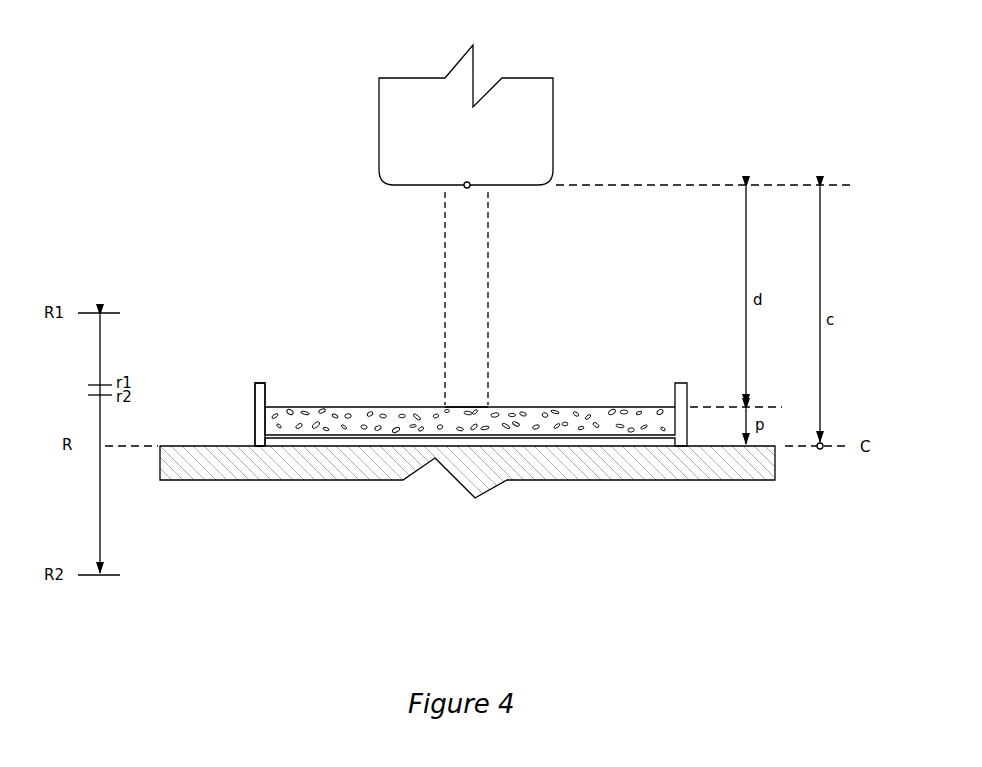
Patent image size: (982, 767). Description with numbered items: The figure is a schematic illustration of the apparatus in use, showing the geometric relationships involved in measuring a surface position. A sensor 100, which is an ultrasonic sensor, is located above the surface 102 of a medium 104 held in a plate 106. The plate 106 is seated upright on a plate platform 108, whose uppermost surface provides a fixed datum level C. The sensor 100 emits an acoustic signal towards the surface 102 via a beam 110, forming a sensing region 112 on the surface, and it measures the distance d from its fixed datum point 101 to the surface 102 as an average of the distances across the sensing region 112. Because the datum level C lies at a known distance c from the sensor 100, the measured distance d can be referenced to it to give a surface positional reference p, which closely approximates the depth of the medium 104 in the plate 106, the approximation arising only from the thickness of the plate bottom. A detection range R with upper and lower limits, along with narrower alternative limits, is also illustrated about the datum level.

The sensor 100 is at (561, 108).
The fixed datum point 101 is at (470, 184).
The surface 102 is at (292, 400).
The medium 104 is at (370, 418).
The plate 106 is at (257, 403).
The plate platform 108 is at (196, 446).
The beam 110 is at (468, 262).
The sensing region 112 is at (474, 400).